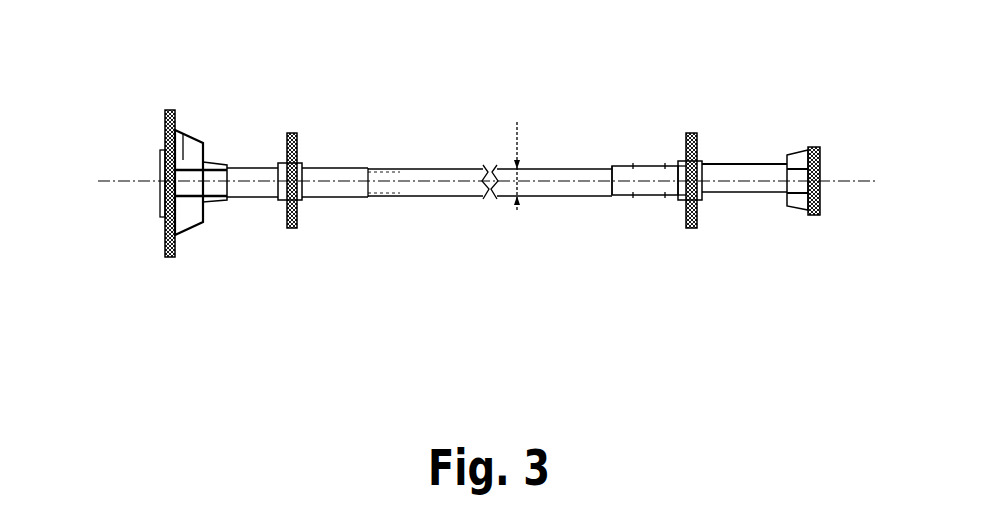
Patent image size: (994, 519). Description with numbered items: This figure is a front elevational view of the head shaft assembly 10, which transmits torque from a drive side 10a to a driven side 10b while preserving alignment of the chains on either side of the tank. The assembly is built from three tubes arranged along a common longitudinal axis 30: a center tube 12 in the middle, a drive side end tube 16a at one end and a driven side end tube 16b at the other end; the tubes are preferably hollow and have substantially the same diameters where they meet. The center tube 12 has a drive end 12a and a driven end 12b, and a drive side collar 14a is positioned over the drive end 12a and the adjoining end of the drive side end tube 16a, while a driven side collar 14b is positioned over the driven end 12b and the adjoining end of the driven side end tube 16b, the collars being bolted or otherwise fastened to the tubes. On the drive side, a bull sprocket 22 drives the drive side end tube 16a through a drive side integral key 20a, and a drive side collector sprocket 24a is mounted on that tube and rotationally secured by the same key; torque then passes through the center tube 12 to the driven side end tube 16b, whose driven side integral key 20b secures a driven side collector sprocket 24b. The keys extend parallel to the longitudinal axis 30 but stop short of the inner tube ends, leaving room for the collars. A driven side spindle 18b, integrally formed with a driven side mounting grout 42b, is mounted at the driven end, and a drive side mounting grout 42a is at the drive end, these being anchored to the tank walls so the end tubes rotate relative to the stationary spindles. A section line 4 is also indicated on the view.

The head shaft assembly 10 is at (180, 77).
The drive side 10a is at (245, 266).
The driven side 10b is at (727, 244).
The center tube 12 is at (422, 188).
The drive end 12a is at (384, 190).
The driven end 12b is at (601, 193).
The drive side collar 14a is at (322, 168).
The driven side collar 14b is at (640, 178).
The drive side end tube 16a is at (247, 188).
The driven side end tube 16b is at (768, 190).
The driven side spindle 18b is at (795, 152).
The drive side integral key 20a is at (243, 162).
The driven side integral key 20b is at (722, 162).
The bull sprocket 22 is at (186, 132).
The drive side collector sprocket 24a is at (289, 230).
The driven side collector sprocket 24b is at (686, 230).
The longitudinal axis 30 is at (112, 182).
The drive side mounting grout 42a is at (149, 152).
The driven side mounting grout 42b is at (822, 170).
The section line 4- 4 is at (142, 182).